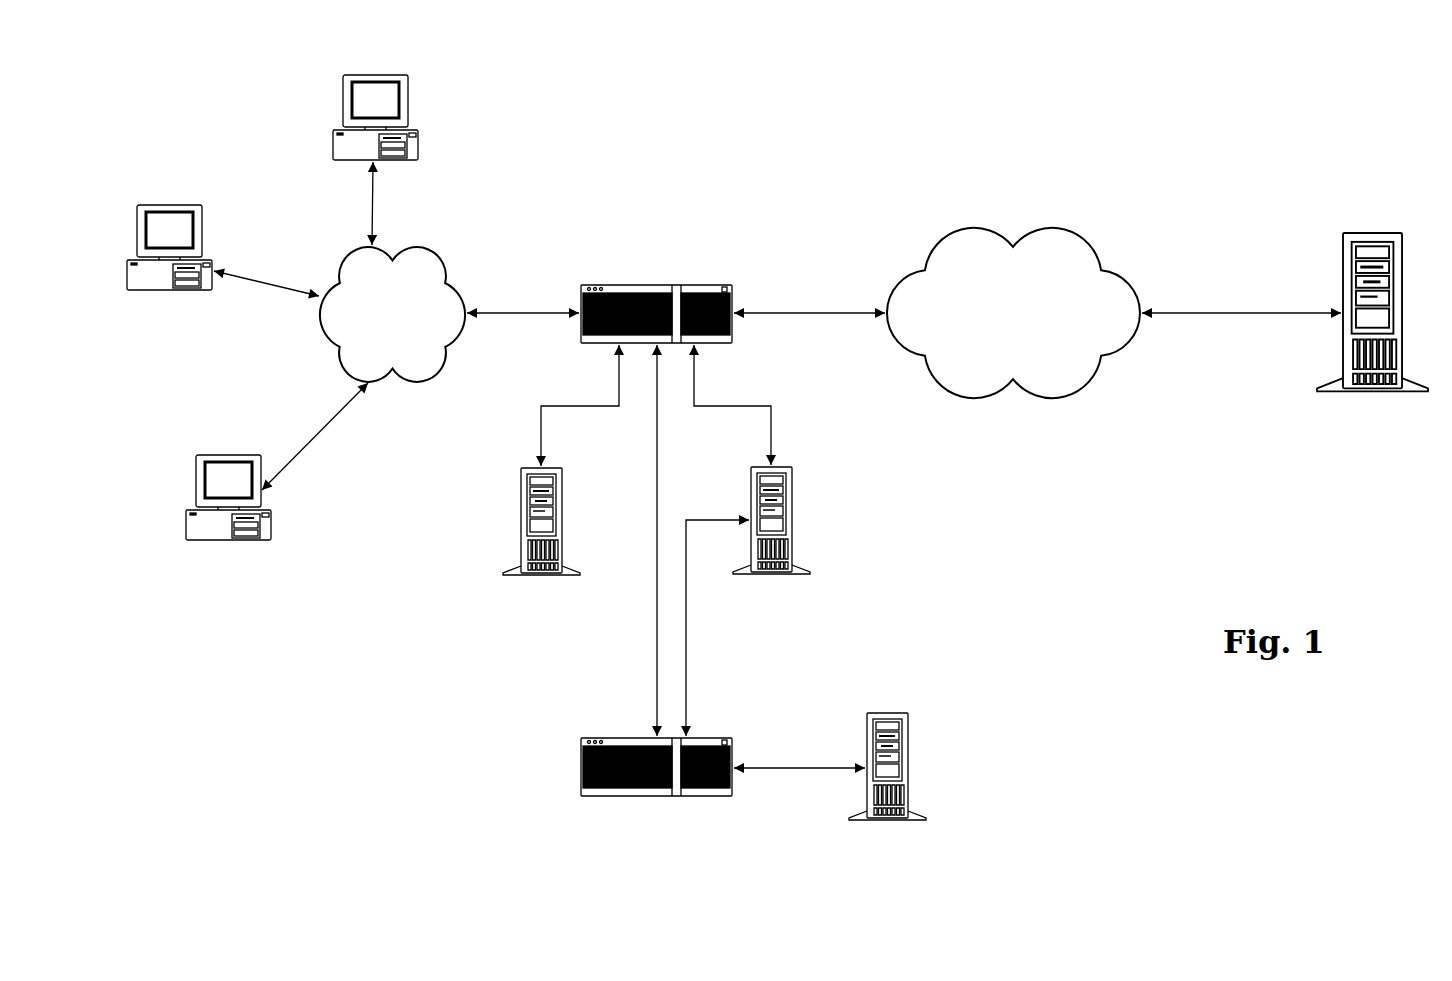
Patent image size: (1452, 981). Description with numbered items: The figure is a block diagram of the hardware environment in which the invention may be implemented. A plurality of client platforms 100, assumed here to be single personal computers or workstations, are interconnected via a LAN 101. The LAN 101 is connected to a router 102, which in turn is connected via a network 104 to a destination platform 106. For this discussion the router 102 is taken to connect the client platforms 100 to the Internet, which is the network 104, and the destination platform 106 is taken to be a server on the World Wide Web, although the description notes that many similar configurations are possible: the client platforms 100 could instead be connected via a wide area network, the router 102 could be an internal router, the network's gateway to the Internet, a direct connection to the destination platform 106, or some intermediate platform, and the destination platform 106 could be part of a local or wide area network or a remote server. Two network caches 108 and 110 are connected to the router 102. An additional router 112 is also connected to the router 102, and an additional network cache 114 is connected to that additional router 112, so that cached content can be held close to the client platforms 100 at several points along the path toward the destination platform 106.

The client platform 100 is at (394, 75).
The LAN 101 is at (438, 264).
The router 102 is at (706, 283).
The network 104 is at (961, 232).
The destination platform 106 is at (1390, 233).
The network cache 108 is at (521, 496).
The network cache 110 is at (795, 502).
The additional router 112 is at (610, 738).
The additional network cache 114 is at (910, 737).